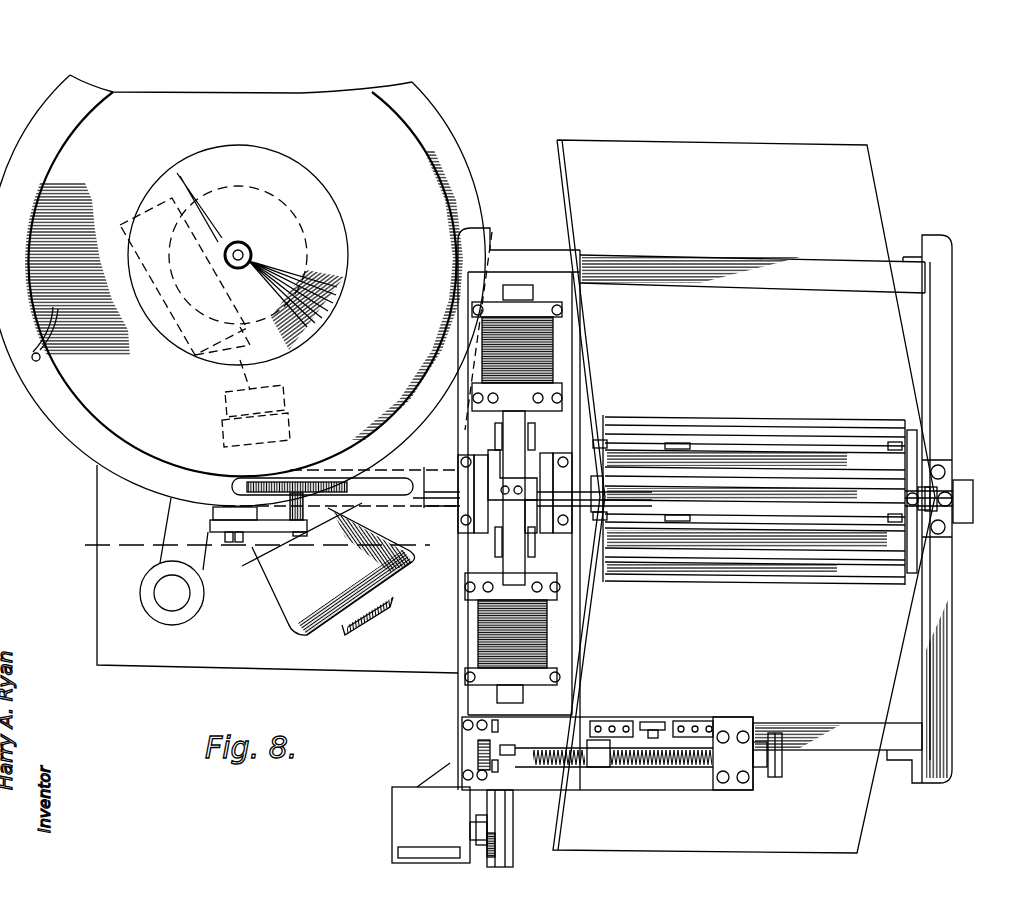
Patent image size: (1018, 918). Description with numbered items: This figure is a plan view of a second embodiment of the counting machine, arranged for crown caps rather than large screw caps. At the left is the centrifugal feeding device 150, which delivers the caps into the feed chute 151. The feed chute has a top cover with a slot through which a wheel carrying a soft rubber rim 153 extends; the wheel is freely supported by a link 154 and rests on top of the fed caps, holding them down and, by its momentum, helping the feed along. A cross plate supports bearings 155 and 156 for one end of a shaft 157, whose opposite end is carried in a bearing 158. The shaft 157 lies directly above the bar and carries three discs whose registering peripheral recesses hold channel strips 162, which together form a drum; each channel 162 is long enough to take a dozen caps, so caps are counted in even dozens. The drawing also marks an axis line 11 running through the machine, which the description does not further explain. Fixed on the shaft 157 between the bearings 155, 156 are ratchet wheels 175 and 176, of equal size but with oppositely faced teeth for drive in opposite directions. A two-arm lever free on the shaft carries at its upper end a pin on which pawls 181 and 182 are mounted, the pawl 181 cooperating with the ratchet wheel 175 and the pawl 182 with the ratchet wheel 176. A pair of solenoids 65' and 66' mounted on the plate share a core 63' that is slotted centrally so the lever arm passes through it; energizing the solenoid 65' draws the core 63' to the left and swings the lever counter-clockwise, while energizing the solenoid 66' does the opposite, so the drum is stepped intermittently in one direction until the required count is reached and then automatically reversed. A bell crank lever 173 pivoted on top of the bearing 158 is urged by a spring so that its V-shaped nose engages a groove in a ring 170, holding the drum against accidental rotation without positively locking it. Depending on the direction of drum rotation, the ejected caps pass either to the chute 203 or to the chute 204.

The centrifugal feeding device 150 is at (456, 146).
The shaft 11 is at (993, 497).
The soft rubber rim 153 is at (287, 478).
The link 154 is at (318, 472).
The bearing 155 is at (460, 478).
The feed chute 151 is at (432, 512).
The pawl 181 is at (488, 452).
The ratchet wheel 175 is at (498, 438).
The ratchet wheel 176 is at (533, 449).
The core 63' is at (514, 489).
The solenoid 66' is at (546, 356).
The solenoid 65' is at (543, 638).
The shaft 157 is at (582, 487).
The bearing 156 is at (603, 491).
The pawl 182 is at (532, 556).
The channel strip 162 is at (828, 425).
The bearing 158 is at (948, 478).
The bell crank lever 173 is at (945, 515).
The ring 170 is at (916, 548).
The chute 204 is at (746, 318).
The chute 203 is at (744, 675).